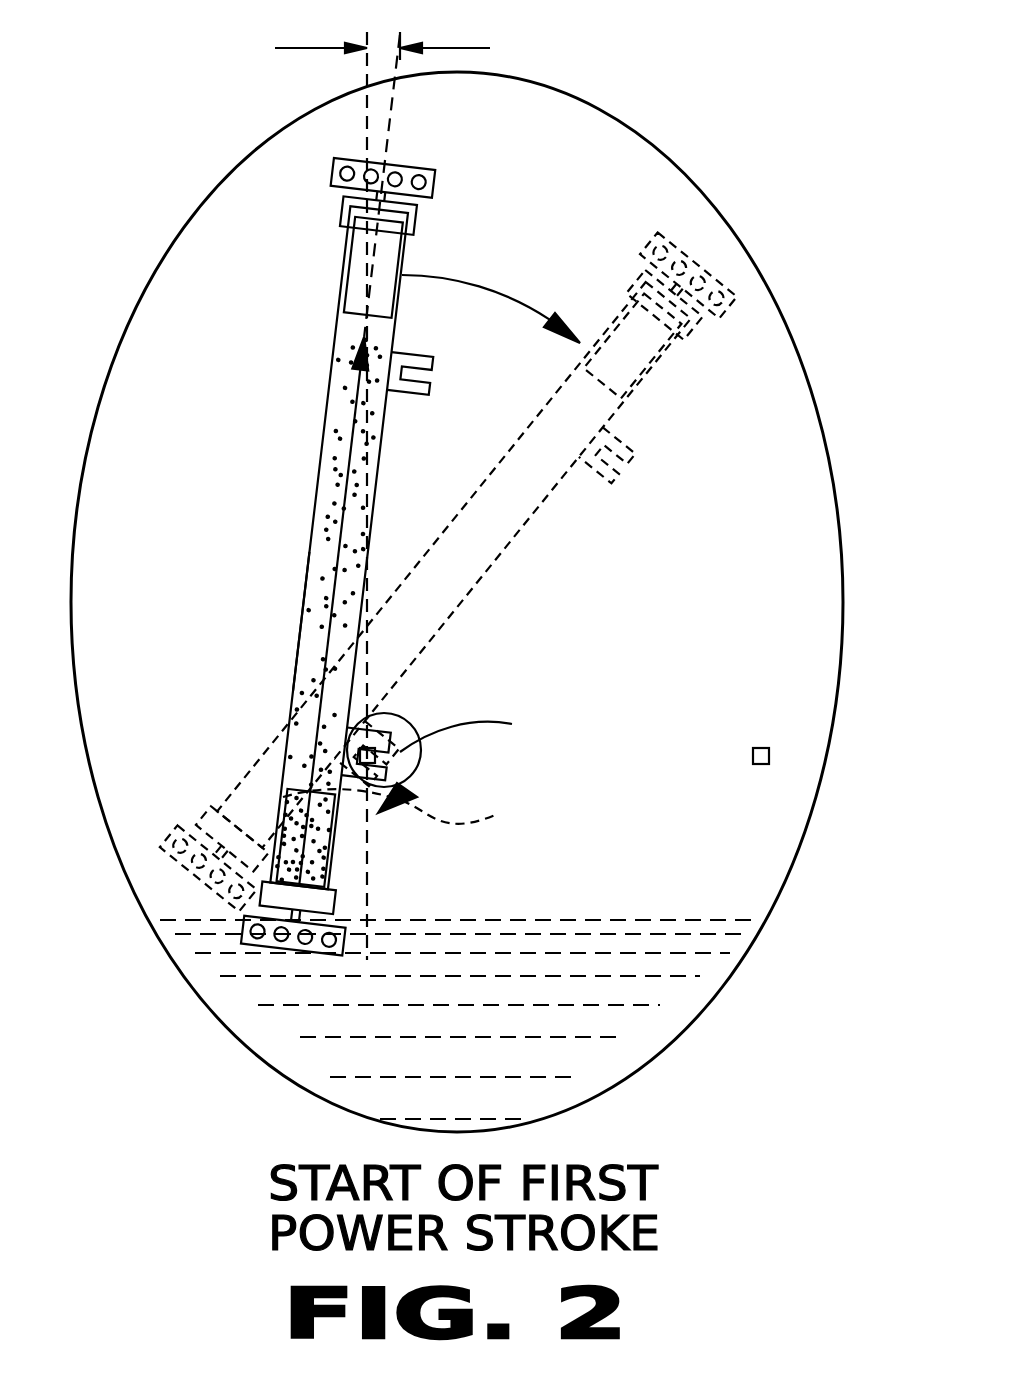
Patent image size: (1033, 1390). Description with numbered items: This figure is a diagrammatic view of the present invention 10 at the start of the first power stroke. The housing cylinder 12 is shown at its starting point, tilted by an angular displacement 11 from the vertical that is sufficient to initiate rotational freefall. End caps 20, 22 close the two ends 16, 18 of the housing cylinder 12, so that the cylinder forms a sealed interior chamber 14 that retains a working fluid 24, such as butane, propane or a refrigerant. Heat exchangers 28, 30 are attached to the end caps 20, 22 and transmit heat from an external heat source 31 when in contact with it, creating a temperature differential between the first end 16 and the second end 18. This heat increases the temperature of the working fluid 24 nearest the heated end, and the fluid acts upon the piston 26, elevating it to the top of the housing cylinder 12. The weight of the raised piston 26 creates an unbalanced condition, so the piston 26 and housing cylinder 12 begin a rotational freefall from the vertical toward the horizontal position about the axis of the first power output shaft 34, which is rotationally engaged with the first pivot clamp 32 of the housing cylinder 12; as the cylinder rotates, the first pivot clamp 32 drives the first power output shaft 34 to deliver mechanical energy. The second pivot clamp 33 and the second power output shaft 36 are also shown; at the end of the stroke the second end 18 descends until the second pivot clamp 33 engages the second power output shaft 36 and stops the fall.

The present invention 10 is at (527, 258).
The angular displacement 11 is at (351, 14).
The housing cylinder 12 is at (303, 598).
The sealed interior chamber 14 is at (373, 503).
The first end 16 is at (333, 857).
The second end 18 is at (347, 280).
The end cap 20 is at (336, 907).
The end cap 22 is at (342, 206).
The working fluid 24 is at (300, 618).
The piston 26 is at (362, 318).
The heat exchanger 28 is at (243, 925).
The heat exchanger 30 is at (427, 182).
The external heat source 31 is at (480, 1054).
The first pivot clamp 32 is at (398, 392).
The second pivot clamp 33 is at (392, 738).
The first power output shaft 34 is at (380, 756).
The second power output shaft 36 is at (753, 756).